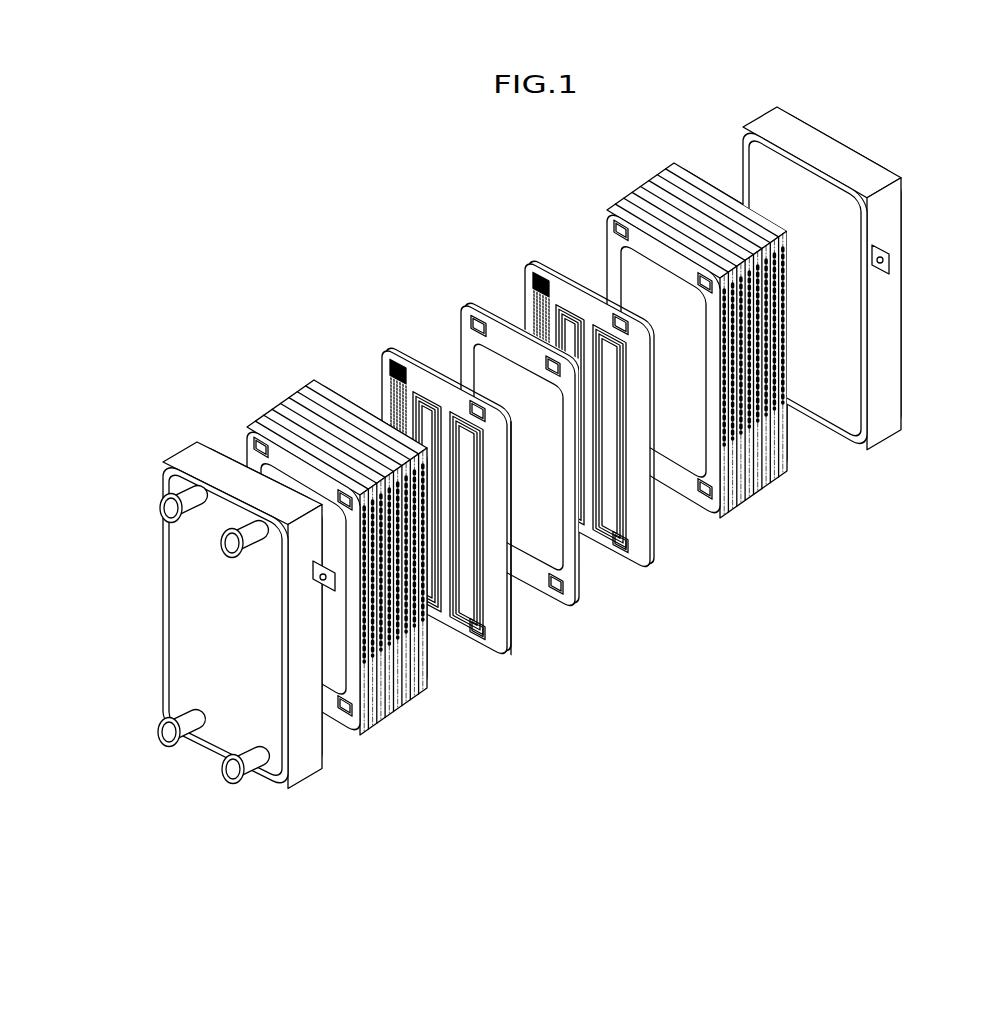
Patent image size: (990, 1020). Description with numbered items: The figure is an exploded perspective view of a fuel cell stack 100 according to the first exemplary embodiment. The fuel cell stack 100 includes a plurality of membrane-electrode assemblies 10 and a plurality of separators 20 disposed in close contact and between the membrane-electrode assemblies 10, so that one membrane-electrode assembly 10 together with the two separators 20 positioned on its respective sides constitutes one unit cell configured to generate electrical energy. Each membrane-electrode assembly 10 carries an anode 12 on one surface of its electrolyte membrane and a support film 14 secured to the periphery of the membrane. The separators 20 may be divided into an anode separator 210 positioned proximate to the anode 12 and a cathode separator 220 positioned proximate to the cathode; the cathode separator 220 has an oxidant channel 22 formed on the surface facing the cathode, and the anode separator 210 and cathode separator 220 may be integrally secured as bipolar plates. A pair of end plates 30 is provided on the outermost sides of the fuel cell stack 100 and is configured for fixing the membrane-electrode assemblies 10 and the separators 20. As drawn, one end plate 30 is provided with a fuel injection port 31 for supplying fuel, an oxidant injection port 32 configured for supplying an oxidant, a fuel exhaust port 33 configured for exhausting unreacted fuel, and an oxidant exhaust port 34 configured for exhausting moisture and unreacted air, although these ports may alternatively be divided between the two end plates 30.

The fuel cell stack 100 is at (375, 190).
The membrane-electrode assembly 10 is at (532, 452).
The anode 12 is at (560, 547).
The support film 14 is at (467, 310).
The separator 20 is at (519, 494).
The anode separator 210 is at (508, 632).
The cathode separator 220 is at (514, 565).
The oxidant channel 22 is at (397, 403).
The end plate 30 is at (893, 381).
The fuel injection port 31 is at (224, 544).
The oxidant injection port 32 is at (161, 507).
The fuel exhaust port 33 is at (161, 734).
The oxidant exhaust port 34 is at (223, 775).